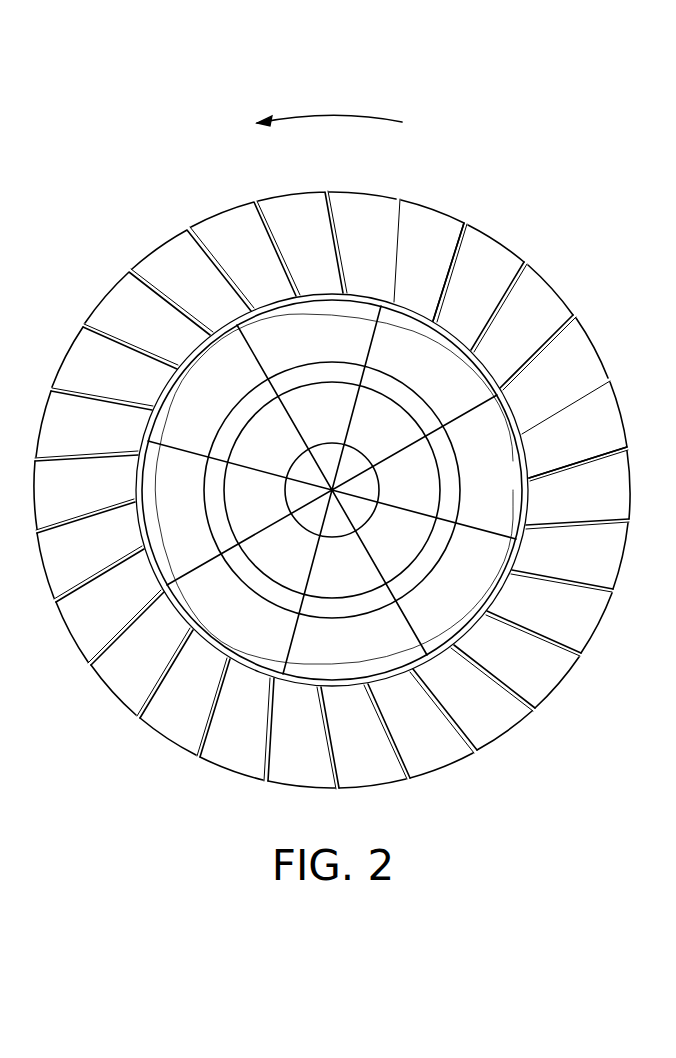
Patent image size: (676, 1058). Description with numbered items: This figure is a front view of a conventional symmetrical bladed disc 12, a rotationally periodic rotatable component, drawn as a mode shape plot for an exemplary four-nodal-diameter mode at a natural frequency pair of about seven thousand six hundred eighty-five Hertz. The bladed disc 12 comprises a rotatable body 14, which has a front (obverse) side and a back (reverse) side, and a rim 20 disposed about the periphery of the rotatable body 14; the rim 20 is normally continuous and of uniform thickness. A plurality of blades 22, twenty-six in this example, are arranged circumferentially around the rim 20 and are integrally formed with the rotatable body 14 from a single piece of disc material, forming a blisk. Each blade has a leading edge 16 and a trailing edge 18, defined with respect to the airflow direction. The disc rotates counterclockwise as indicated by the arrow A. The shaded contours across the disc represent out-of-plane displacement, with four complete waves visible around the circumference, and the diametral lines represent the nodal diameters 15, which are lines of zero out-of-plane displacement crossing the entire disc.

The bladed disc 12 is at (503, 190).
The rotatable body 14 is at (450, 388).
The nodal diameters 15 is at (265, 360).
The leading edge 16 is at (323, 193).
The trailing edge 18 is at (397, 195).
The rim 20 is at (528, 460).
The blades 22 is at (225, 223).
The arrow A is at (335, 117).